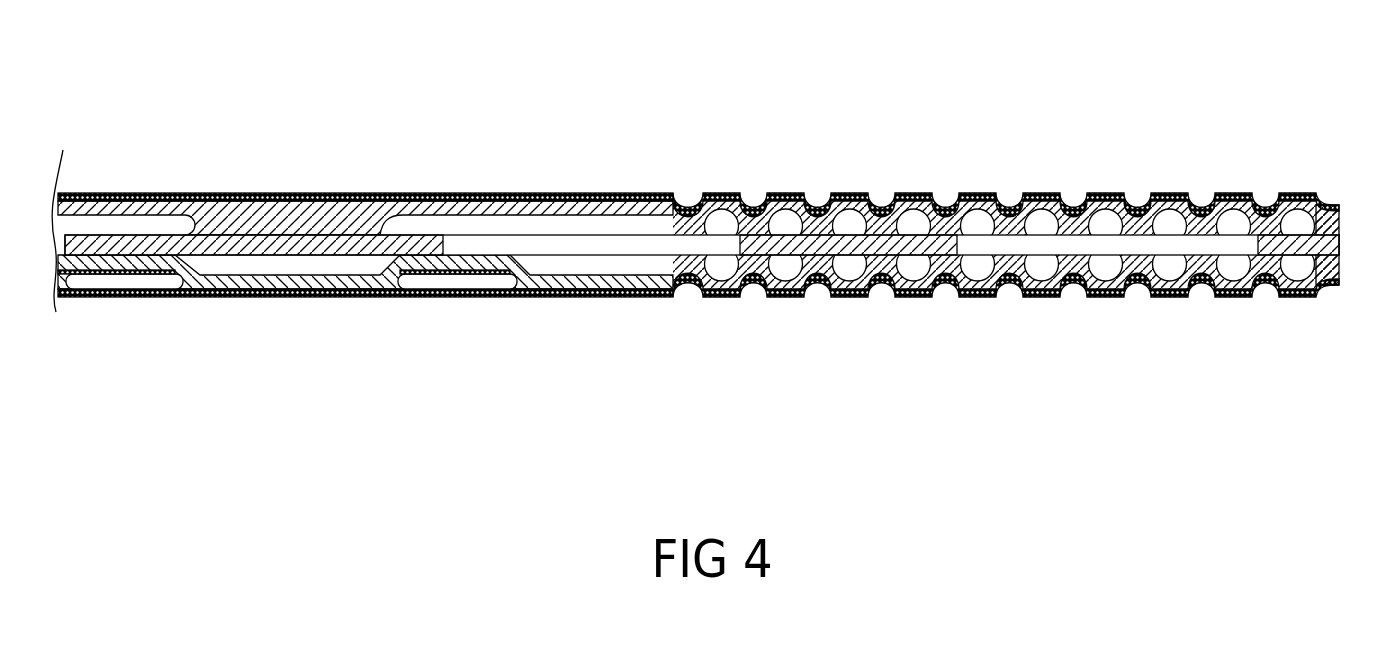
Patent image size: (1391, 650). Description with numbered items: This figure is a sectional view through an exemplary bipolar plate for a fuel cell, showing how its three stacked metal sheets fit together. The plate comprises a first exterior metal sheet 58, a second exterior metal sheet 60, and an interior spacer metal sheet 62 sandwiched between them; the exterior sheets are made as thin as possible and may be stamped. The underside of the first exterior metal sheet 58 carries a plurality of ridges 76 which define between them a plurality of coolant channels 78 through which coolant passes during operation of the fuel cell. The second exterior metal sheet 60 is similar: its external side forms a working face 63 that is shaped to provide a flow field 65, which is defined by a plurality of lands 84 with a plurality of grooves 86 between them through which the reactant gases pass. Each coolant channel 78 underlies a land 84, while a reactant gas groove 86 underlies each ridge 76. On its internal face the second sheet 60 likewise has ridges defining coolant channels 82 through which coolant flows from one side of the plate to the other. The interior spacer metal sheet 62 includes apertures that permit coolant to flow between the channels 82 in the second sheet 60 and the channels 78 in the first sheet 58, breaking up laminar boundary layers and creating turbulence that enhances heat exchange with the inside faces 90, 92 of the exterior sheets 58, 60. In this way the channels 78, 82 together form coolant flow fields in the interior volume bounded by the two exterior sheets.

The first exterior metal sheet 58 is at (119, 192).
The second exterior metal sheet 60 is at (275, 298).
The interior spacer metal sheet 62 is at (1340, 243).
The working face 63 is at (1172, 298).
The flow field 65 is at (1006, 367).
The ridges 76 is at (1006, 238).
The coolant channels 78 is at (721, 232).
The coolant channels 82 is at (850, 266).
The lands 84 is at (907, 295).
The grooves 86 is at (1075, 292).
The inside face 90 is at (490, 215).
The inside face 92 is at (517, 291).